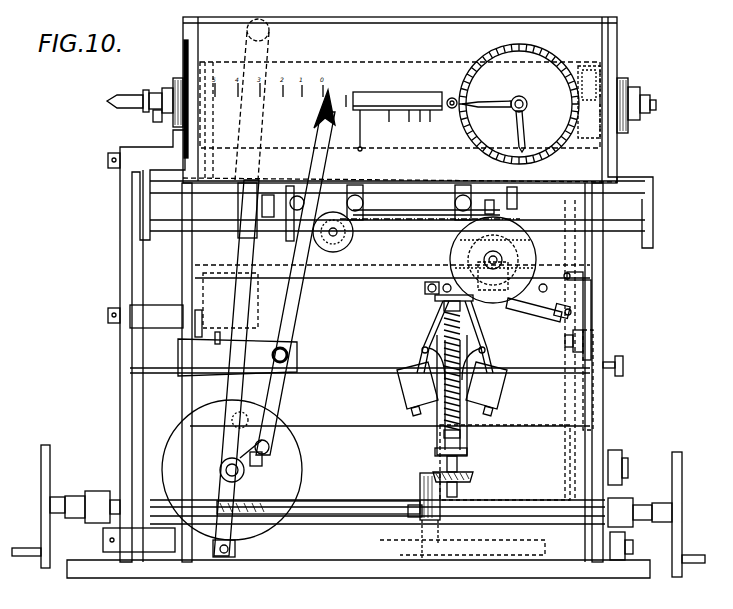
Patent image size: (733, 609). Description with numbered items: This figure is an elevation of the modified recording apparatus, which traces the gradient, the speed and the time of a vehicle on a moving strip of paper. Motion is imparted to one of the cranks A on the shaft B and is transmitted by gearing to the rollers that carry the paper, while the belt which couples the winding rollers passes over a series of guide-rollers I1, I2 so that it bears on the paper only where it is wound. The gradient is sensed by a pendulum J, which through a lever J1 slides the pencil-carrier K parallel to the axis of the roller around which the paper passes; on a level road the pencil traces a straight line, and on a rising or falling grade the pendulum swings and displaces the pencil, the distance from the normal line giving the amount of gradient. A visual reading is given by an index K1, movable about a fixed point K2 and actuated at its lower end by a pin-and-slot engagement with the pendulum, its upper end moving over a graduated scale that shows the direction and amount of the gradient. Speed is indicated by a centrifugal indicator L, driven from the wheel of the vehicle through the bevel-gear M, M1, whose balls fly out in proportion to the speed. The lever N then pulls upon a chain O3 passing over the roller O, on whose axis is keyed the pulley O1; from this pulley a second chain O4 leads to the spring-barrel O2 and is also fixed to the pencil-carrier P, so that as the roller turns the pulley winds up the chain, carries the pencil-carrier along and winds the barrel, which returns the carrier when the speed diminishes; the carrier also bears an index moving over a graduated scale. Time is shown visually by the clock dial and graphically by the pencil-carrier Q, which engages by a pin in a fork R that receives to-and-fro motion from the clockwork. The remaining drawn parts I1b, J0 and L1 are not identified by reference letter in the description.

The crank A is at (43, 507).
The shaft B is at (143, 505).
The guide-roller I1 is at (398, 104).
The lever I1b is at (573, 316).
The guide-roller I2 is at (595, 140).
The pendulum J is at (292, 477).
The guide J0 is at (238, 288).
The lever J1 is at (258, 305).
The pencil-carrier K is at (296, 212).
The index K1 is at (326, 158).
The fixed point K2 is at (285, 352).
The centrifugal indicator L is at (430, 338).
The shaft L1 is at (357, 509).
The bevel-gear M is at (424, 488).
The bevel-gear M1 is at (470, 477).
The lever N is at (534, 304).
The roller O is at (504, 260).
The pulley O1 is at (530, 260).
The spring-barrel O2 is at (352, 243).
The chain O3 is at (547, 285).
The chain O4 is at (415, 218).
The pencil-carrier P is at (358, 196).
The pencil-carrier Q is at (462, 195).
The fork R is at (497, 203).